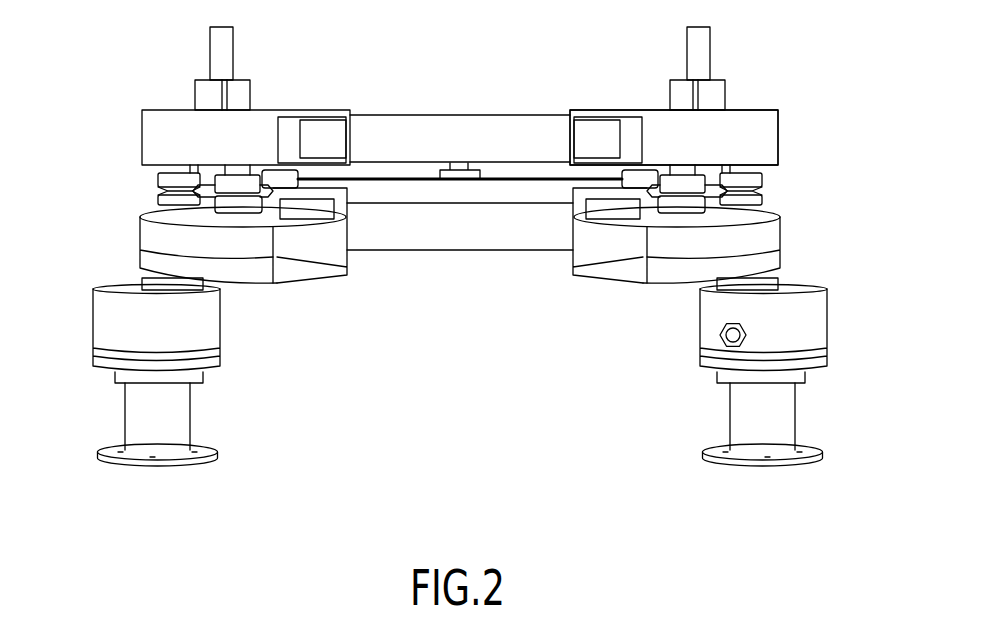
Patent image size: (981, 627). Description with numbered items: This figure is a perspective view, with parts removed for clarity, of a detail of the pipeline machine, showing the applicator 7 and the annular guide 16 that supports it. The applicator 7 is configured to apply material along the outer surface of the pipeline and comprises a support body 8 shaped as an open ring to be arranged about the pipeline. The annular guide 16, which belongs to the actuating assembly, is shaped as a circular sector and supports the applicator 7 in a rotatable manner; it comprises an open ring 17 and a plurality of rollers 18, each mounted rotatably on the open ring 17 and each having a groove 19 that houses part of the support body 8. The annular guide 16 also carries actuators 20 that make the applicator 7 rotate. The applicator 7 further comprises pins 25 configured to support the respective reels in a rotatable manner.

The applicator 7 is at (380, 470).
The support body 8 is at (458, 222).
The annular guide 16 is at (803, 70).
The open ring 17 is at (717, 135).
The rollers 18 is at (180, 178).
The groove 19 is at (143, 202).
The actuators 20 is at (150, 42).
The pins 25 is at (145, 422).